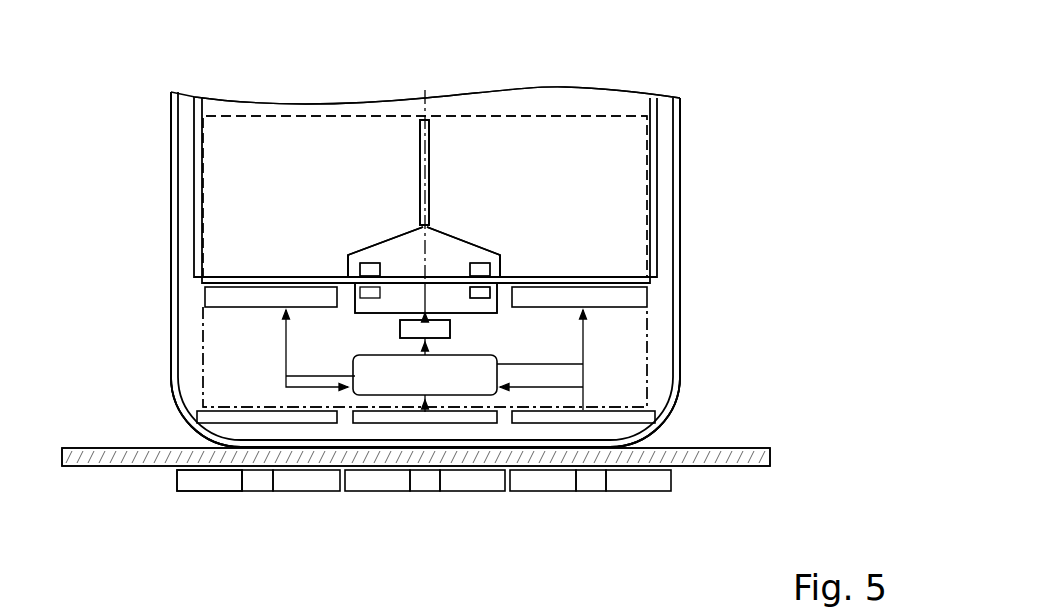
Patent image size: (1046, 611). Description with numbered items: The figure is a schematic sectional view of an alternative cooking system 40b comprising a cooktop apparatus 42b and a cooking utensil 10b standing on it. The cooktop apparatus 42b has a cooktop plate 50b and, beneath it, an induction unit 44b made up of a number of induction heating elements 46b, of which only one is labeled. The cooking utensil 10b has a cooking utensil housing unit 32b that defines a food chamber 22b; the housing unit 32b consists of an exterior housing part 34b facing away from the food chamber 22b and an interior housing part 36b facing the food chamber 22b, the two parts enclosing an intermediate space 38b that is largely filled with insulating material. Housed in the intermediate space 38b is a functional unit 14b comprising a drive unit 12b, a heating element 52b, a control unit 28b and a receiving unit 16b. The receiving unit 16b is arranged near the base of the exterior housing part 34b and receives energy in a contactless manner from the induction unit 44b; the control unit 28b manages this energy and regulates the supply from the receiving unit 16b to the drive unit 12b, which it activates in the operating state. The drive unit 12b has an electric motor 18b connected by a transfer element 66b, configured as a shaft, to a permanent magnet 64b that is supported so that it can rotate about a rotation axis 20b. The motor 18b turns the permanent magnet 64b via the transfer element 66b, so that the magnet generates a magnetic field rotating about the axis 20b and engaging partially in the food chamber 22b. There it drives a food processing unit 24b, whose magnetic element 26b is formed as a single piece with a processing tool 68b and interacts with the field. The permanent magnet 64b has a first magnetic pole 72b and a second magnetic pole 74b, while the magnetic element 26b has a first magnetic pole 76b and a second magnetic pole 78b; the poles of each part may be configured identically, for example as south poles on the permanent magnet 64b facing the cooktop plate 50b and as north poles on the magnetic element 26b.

The cooking utensil 10b is at (722, 128).
The drive unit 12b is at (512, 317).
The functional unit 14b is at (305, 117).
The receiving unit 16b is at (642, 418).
The electric motor 18b is at (438, 331).
The rotation axis 20b is at (425, 90).
The food chamber 22b is at (290, 178).
The food processing unit 24b is at (494, 224).
The magnetic element 26b is at (503, 252).
The processing tool 68b is at (424, 252).
The control unit 28b is at (472, 370).
The cooking utensil housing unit 32b is at (683, 175).
The exterior housing part 34b is at (681, 230).
The interior housing part 36b is at (662, 98).
The intermediate space 38b is at (272, 400).
The cooking system 40b is at (760, 76).
The cooktop apparatus 42b is at (776, 414).
The induction unit 44b is at (178, 480).
The induction heating element 46b is at (213, 478).
The cooktop plate 50b is at (93, 458).
The heating element 52b is at (223, 293).
The permanent magnet 64b is at (400, 303).
The transfer element 66b is at (398, 326).
The first magnetic pole 72b is at (345, 278).
The second magnetic pole 74b is at (500, 292).
The first magnetic pole 76b is at (368, 262).
The second magnetic pole 78b is at (476, 262).